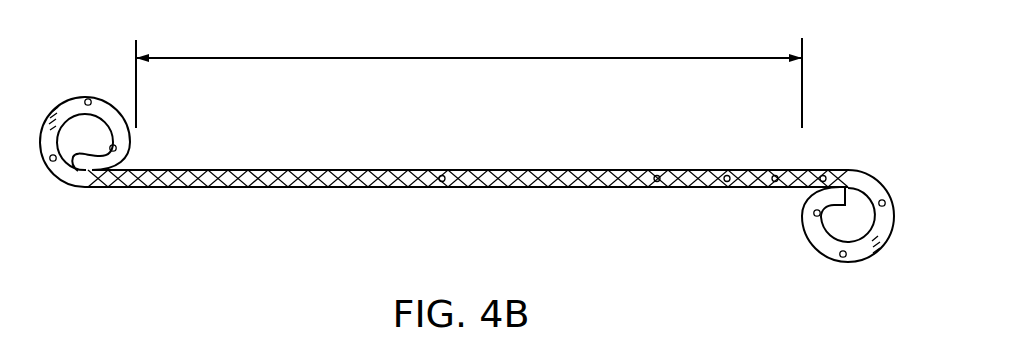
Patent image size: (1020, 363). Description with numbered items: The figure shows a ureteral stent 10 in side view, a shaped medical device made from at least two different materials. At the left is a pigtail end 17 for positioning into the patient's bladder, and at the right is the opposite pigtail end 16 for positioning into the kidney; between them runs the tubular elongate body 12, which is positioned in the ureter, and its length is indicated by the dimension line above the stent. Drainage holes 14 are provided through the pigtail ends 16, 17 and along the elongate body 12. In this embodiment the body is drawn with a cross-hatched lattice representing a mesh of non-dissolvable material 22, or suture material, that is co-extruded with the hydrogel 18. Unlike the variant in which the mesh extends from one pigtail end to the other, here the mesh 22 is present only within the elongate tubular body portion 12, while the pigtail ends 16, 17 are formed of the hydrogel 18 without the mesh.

The ureteral stent 10 is at (305, 266).
The tubular elongate body 12 is at (469, 80).
The drainage holes 14 is at (118, 149).
The pigtail end 16 is at (807, 275).
The second pigtail end 17 is at (76, 82).
The hydrogel segment 18 is at (540, 181).
The mesh of non-dissolvable material 22 is at (608, 168).